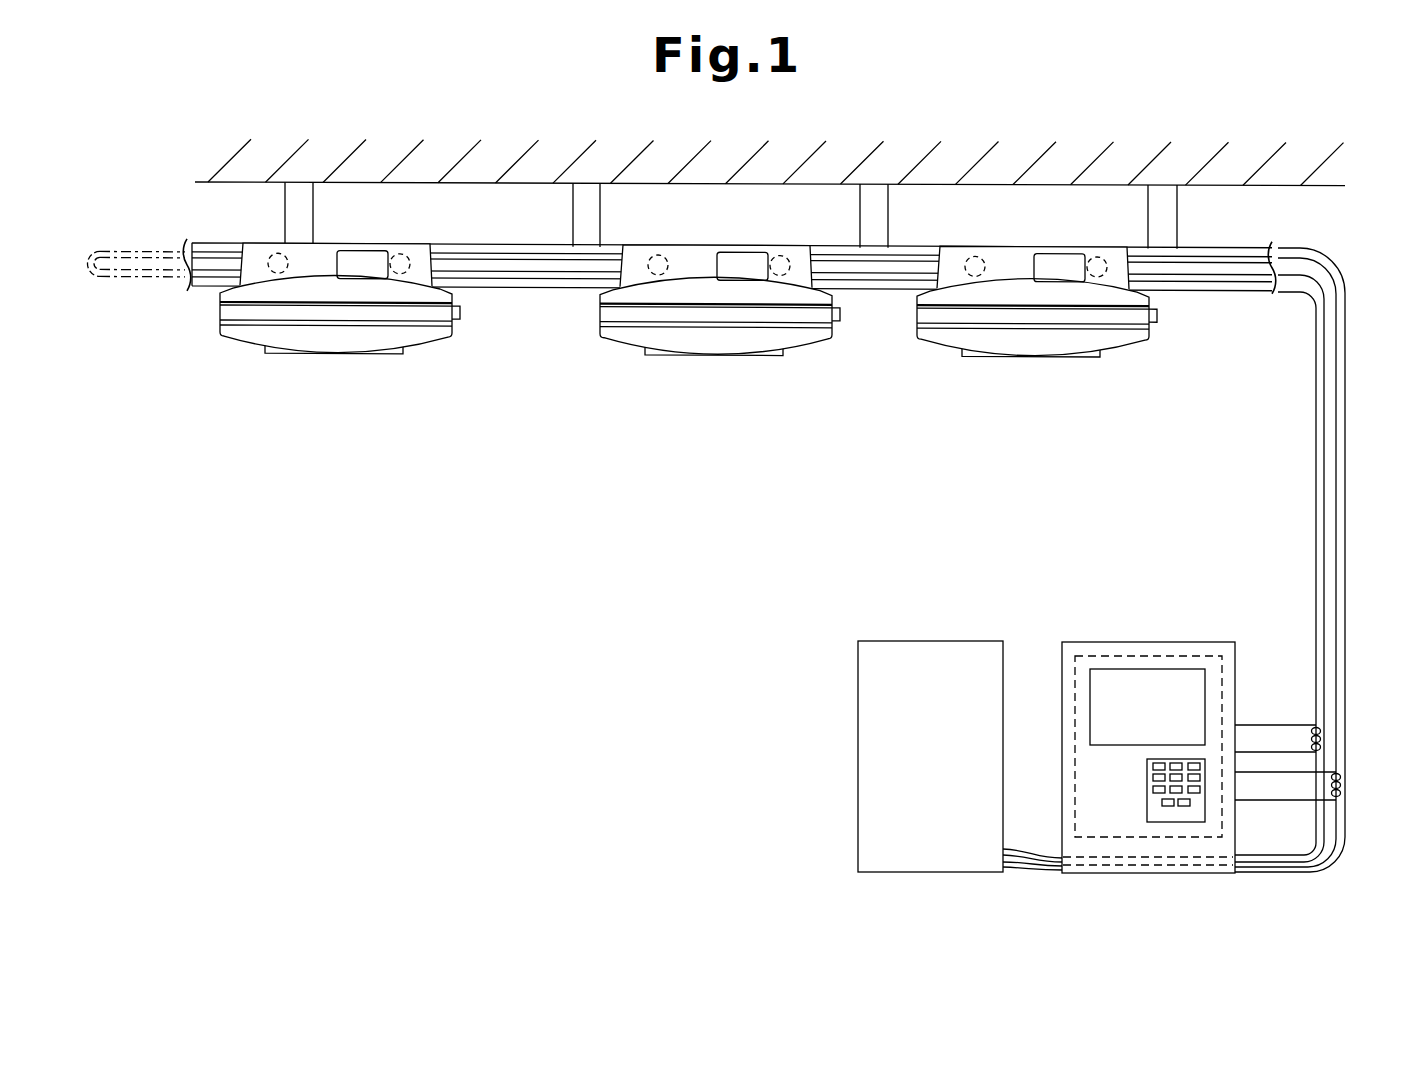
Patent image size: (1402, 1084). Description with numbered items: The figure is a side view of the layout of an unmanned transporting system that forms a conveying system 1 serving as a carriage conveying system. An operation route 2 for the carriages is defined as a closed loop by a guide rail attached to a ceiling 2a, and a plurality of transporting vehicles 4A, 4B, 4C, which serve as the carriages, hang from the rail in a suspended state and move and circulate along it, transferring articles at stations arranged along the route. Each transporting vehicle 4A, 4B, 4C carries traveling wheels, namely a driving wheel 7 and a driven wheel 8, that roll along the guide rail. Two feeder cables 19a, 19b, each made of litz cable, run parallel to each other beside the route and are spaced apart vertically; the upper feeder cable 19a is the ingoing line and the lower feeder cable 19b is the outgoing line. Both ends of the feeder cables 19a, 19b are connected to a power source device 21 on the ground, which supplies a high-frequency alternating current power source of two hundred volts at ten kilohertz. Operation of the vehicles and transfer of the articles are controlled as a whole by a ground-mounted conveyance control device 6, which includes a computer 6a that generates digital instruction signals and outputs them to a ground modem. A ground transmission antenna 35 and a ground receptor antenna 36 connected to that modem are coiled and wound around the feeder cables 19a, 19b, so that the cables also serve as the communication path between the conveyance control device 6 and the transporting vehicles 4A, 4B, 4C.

The conveying system 1 is at (722, 481).
The operation route 2 is at (717, 537).
The ceiling 2a is at (1210, 187).
The transporting vehicle 4A is at (1120, 347).
The transporting vehicle 4B is at (803, 345).
The transporting vehicle 4C is at (423, 345).
The conveyance control device 6 is at (1199, 729).
The computer 6a is at (1168, 654).
The driving wheel 7 is at (1098, 251).
The driven wheel 8 is at (968, 254).
The feeder cable 19a is at (460, 253).
The feeder cable 19b is at (535, 272).
The power source device 21 is at (925, 641).
The ground transmission antenna 35 is at (1321, 738).
The ground receptor antenna 36 is at (1341, 786).